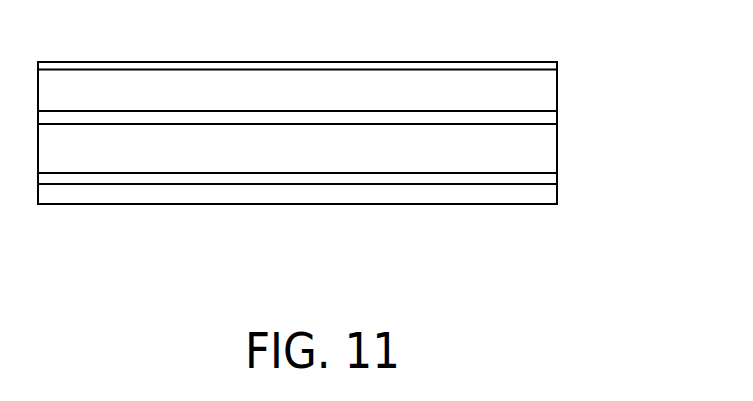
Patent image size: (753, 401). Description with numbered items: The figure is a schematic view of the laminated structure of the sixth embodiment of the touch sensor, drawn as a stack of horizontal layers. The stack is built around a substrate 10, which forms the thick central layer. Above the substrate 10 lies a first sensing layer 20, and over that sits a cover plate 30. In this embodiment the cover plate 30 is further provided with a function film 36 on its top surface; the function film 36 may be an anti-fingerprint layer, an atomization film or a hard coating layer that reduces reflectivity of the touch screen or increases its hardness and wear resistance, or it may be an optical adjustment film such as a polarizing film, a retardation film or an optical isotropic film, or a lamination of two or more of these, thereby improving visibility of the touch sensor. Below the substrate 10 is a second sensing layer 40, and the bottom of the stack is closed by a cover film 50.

The substrate 10 is at (538, 148).
The first sensing layer 20 is at (548, 117).
The cover plate 30 is at (538, 82).
The function film 36 is at (490, 63).
The second sensing layer 40 is at (547, 178).
The cover film 50 is at (547, 198).